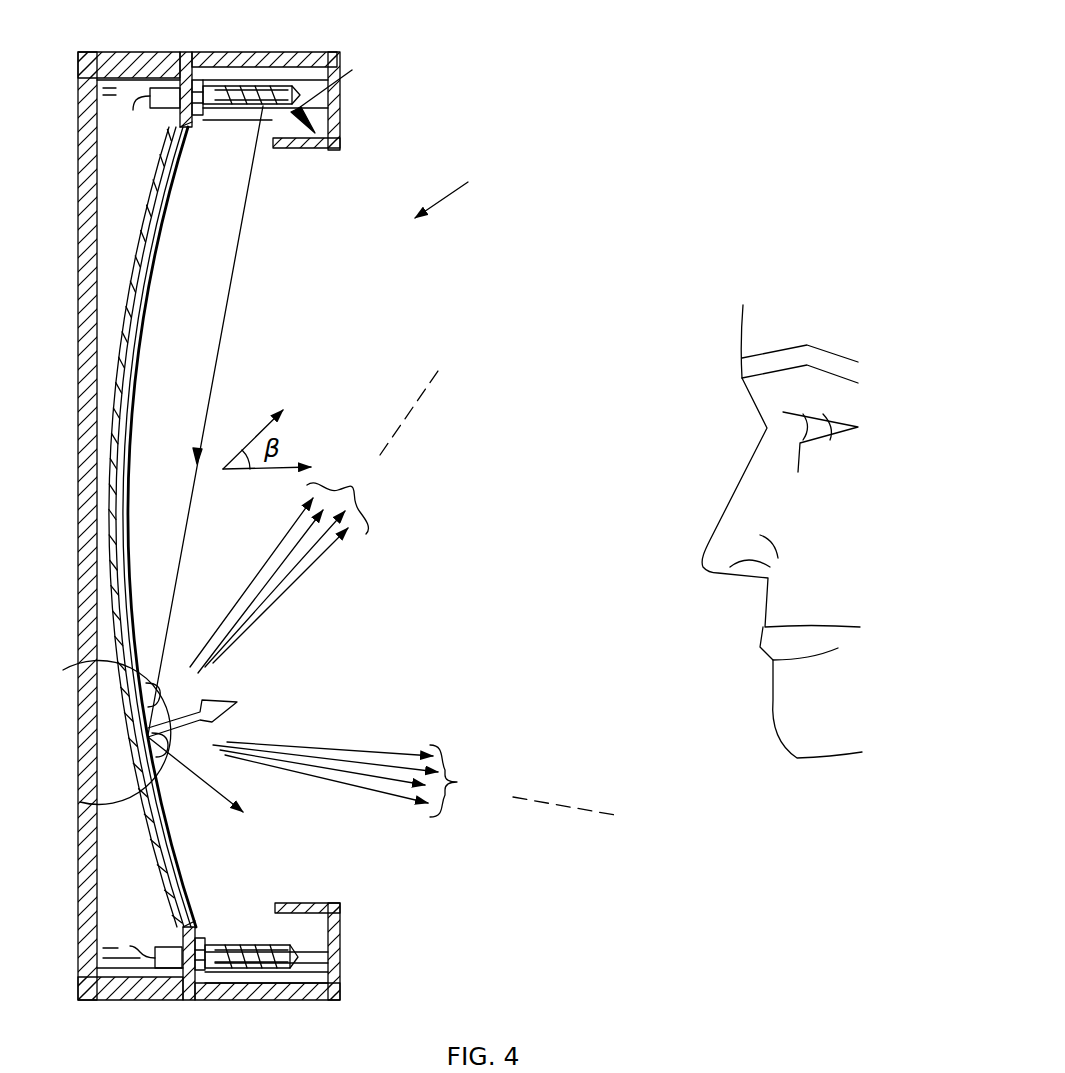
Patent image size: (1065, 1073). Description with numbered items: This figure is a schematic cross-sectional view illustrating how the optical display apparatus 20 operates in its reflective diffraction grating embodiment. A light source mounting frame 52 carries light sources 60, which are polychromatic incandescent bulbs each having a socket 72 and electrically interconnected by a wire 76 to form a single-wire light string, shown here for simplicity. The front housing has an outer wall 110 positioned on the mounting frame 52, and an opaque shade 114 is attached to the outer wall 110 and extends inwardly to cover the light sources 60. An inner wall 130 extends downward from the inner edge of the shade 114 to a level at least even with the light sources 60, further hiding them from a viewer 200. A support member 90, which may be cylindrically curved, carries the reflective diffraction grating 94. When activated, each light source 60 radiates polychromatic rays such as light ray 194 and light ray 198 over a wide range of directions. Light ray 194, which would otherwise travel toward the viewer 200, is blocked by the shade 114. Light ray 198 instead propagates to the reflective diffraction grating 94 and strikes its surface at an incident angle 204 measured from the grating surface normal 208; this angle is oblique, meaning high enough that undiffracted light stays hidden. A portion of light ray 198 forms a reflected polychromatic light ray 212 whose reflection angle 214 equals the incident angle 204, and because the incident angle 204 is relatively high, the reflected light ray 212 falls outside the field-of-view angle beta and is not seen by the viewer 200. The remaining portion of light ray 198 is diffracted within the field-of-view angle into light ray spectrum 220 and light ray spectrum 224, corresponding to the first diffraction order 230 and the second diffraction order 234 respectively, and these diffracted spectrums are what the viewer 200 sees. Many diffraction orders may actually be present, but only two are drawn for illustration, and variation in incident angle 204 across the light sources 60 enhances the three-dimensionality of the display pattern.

The optical display apparatus 20 is at (458, 187).
The light source mounting frame 52 is at (197, 117).
The light source 60 is at (248, 86).
The socket 72 is at (157, 109).
The wire 76 is at (133, 106).
The support member 90 is at (168, 884).
The reflective diffraction grating 94 is at (180, 870).
The outer wall 110 is at (232, 52).
The shade 114 is at (340, 112).
The inner wall 130 is at (305, 148).
The light ray 194 is at (345, 90).
The light ray 198 is at (232, 355).
The viewer 200 is at (758, 413).
The incident angle 204 is at (93, 732).
The reflective diffraction grating surface normal 208 is at (238, 700).
The reflected polychromatic light ray 212 is at (196, 778).
The reflection angle 214 is at (80, 802).
The light ray spectrum 220 is at (362, 779).
The light ray spectrum 224 is at (291, 565).
The first diffraction order 230 is at (553, 806).
The second diffraction order 234 is at (402, 422).